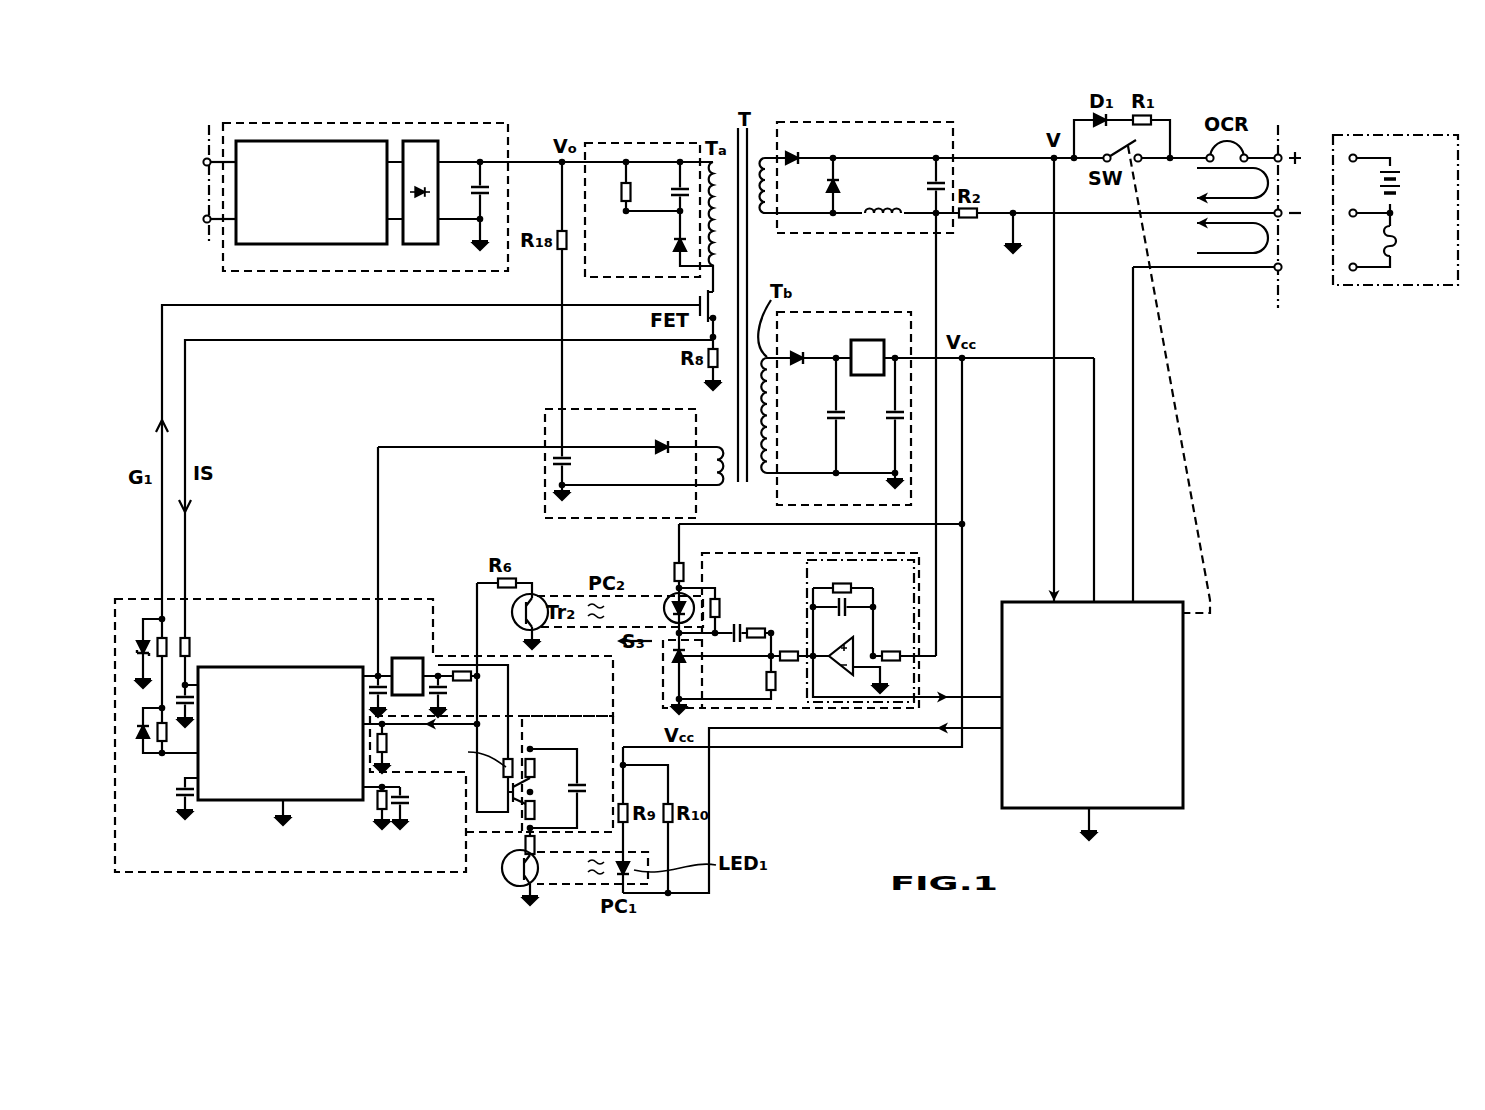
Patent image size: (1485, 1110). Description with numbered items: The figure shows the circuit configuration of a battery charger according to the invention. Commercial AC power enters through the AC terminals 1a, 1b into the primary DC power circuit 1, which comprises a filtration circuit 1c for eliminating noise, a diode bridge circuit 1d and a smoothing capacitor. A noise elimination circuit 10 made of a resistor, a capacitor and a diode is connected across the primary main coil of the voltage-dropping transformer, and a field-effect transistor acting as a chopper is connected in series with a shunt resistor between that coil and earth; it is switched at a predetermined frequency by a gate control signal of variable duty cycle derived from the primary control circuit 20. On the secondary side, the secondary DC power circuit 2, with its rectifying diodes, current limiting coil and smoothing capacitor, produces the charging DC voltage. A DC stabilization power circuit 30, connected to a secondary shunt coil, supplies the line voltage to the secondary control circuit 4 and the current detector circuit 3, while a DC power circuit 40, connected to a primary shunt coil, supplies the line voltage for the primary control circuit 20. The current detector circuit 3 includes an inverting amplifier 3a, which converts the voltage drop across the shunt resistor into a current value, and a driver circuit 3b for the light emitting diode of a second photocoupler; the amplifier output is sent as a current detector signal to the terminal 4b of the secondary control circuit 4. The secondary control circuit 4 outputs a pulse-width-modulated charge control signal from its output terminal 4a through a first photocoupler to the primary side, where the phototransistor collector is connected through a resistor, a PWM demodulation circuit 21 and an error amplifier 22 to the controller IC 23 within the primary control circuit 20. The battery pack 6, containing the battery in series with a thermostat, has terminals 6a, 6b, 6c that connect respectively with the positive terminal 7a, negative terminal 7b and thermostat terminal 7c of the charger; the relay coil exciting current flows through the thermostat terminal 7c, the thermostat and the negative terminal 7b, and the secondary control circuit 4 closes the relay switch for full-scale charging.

The primary DC power circuit 1 is at (339, 179).
The AC terminal 1a is at (207, 162).
The AC terminal 1b is at (207, 219).
The filtration circuit 1c is at (333, 141).
The diode bridge circuit 1d is at (421, 141).
The secondary DC power circuit 2 is at (878, 123).
The current detector circuit 3 is at (810, 619).
The inverting amplifier 3a is at (898, 582).
The driver circuit 3b is at (730, 578).
The secondary control circuit 4 is at (924, 747).
The charge control signal output terminal 4a is at (1002, 742).
The terminal 4b is at (1002, 690).
The battery pack 6 is at (1395, 212).
The terminal 6a is at (1352, 154).
The terminal 6b is at (1352, 210).
The terminal 6c is at (1352, 270).
The positive terminal 7a is at (1278, 156).
The negative terminal 7b is at (1278, 215).
The thermostat terminal 7c is at (1278, 268).
The noise elimination circuit 10 is at (621, 143).
The primary control circuit 20 is at (382, 720).
The PWM demodulation circuit 21 is at (592, 740).
The error amplifier 22 is at (481, 834).
The controller IC 23 is at (273, 667).
The DC stabilization power circuit 30 is at (846, 311).
The DC power circuit 40 is at (602, 409).